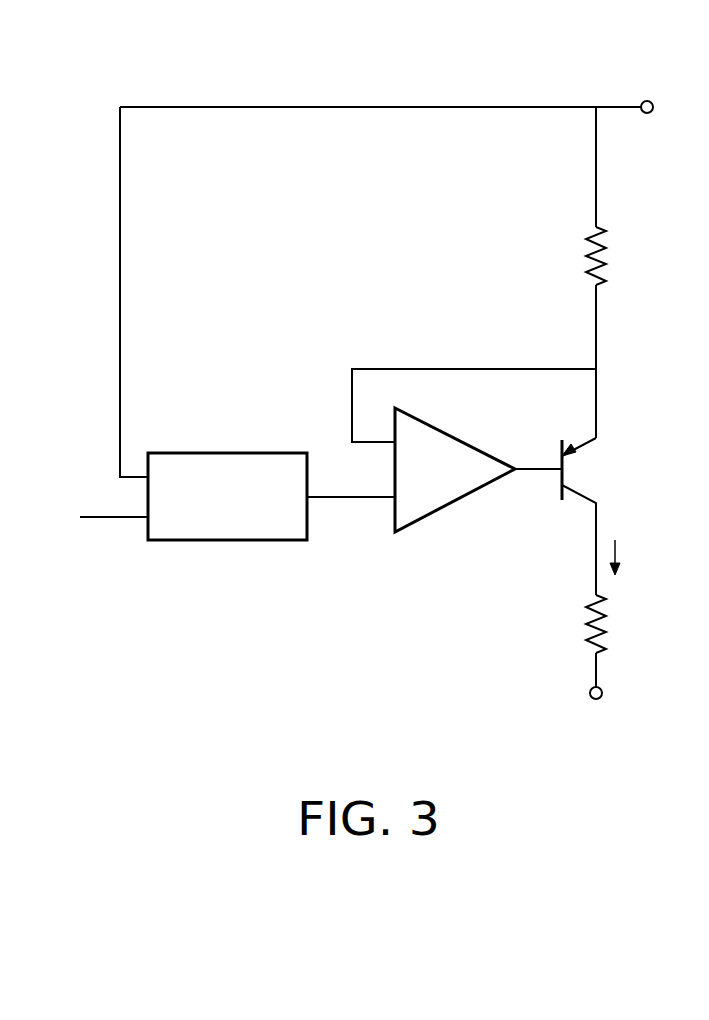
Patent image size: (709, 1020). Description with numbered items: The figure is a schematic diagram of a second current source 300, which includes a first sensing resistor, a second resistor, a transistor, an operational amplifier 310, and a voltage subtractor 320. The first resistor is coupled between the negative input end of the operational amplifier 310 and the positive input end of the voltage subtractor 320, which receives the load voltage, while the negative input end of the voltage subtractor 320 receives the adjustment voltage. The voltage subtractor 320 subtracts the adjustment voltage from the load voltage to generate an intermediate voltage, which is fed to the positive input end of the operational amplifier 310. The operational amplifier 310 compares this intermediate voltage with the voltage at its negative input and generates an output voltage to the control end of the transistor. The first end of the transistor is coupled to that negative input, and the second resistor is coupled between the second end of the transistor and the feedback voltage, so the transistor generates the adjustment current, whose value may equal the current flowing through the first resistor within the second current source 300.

The second current source 300 is at (351, 423).
The operational amplifier 310 is at (455, 500).
The voltage subtractor 320 is at (238, 453).